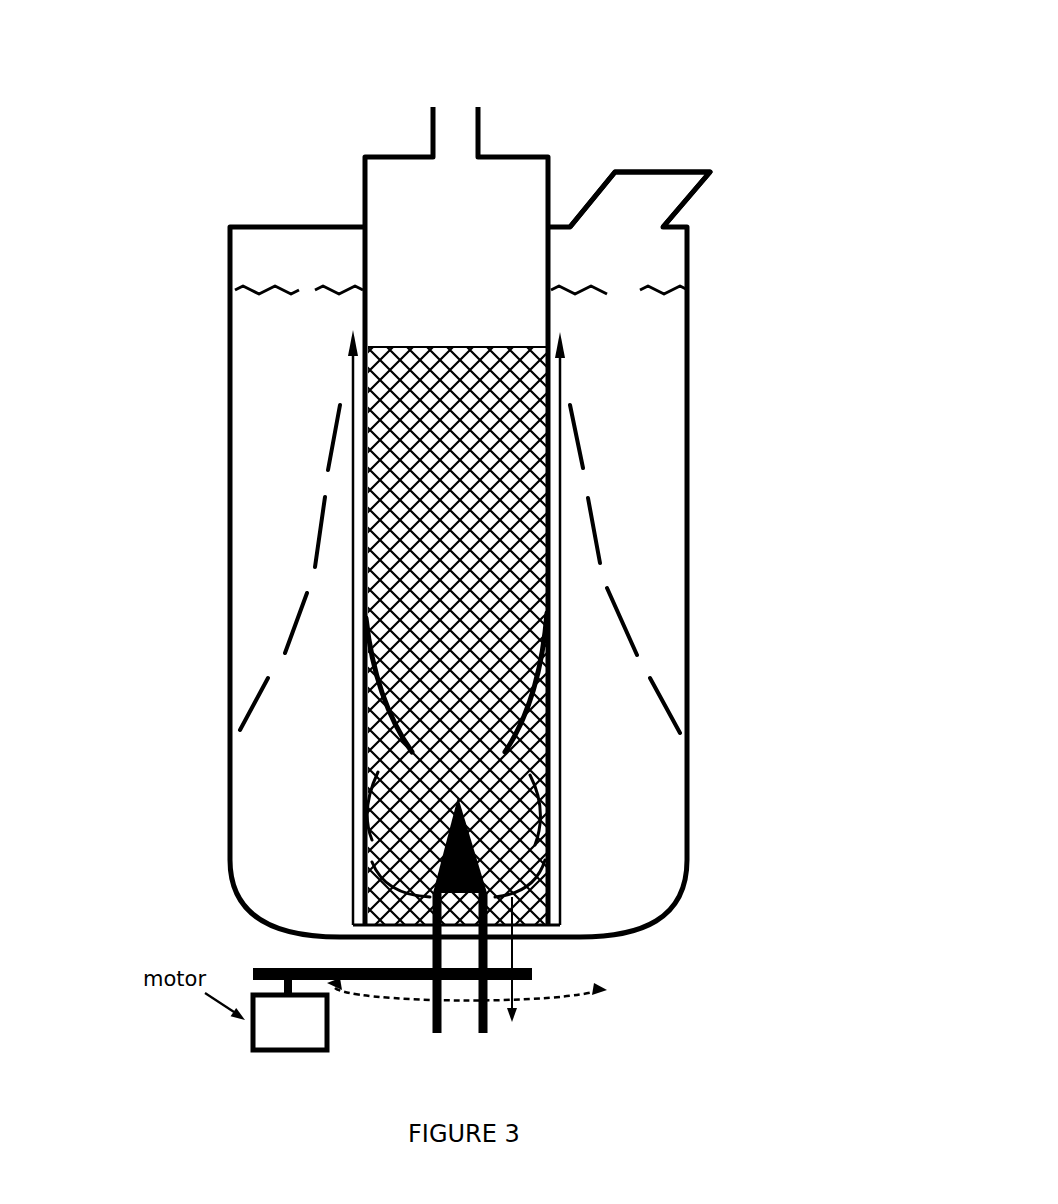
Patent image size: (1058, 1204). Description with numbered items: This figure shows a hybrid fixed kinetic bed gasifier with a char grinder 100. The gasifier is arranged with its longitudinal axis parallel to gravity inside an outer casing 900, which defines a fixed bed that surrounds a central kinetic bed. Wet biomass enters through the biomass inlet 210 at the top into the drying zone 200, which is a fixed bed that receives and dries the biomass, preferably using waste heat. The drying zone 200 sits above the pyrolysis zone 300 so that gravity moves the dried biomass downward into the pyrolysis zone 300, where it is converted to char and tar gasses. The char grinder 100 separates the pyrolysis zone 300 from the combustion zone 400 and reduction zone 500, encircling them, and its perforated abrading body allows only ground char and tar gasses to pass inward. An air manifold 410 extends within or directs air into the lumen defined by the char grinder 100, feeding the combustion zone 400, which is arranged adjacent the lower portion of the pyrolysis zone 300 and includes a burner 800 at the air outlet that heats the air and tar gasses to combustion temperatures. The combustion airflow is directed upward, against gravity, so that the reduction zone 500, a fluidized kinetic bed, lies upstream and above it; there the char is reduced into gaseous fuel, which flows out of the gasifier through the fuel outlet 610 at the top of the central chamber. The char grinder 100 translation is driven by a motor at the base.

The char grinder 100 is at (575, 571).
The drying zone 200 is at (274, 376).
The biomass inlet 210 is at (668, 153).
The pyrolysis zone 300 is at (266, 752).
The combustion zone 400 is at (397, 769).
The air manifold 410 is at (491, 1053).
The reduction zone 500 is at (399, 569).
The fuel outlet 610 is at (410, 102).
The burner 800 is at (417, 874).
The casing 900 is at (698, 266).